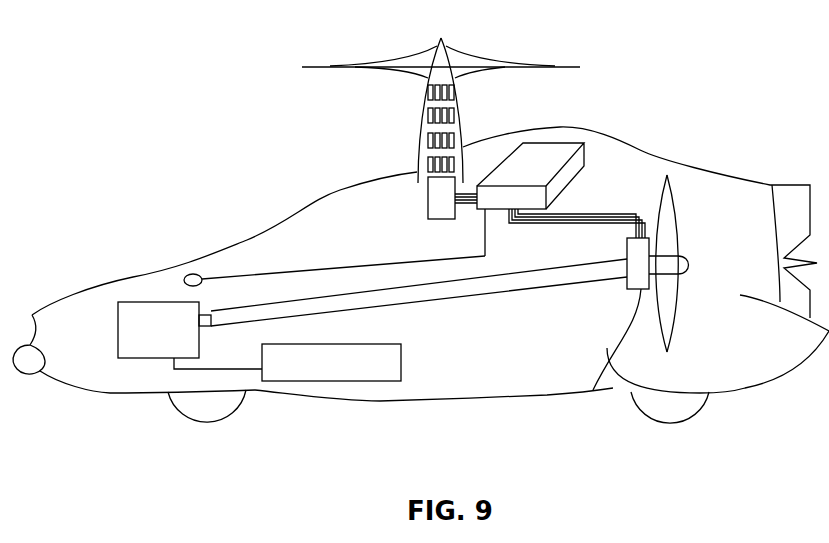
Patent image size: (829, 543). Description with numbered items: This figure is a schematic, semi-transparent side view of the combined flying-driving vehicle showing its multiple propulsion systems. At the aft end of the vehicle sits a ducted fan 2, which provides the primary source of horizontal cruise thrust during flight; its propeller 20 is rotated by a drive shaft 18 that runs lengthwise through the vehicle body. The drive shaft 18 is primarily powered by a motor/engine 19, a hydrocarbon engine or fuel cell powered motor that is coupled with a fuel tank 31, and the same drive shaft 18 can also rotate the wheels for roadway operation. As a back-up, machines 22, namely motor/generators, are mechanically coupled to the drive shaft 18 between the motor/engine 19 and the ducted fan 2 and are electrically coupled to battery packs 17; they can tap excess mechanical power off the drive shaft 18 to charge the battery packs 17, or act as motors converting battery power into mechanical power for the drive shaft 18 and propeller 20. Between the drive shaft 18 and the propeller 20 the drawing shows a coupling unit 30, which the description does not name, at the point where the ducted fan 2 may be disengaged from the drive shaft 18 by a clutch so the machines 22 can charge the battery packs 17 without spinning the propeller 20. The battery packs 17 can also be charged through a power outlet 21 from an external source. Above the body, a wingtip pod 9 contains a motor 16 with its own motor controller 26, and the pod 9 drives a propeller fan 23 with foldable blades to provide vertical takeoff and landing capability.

The ducted fan 2 is at (748, 178).
The pod 9 is at (419, 130).
The motor 16 is at (455, 115).
The battery packs 17 is at (550, 158).
The drive shaft 18 is at (447, 300).
The motor/engine 19 is at (147, 342).
The propeller 20 is at (672, 222).
The power outlet 21 is at (193, 274).
The machines 22 is at (608, 347).
The propeller fan 23 is at (570, 64).
The motor controller 26 is at (440, 206).
The gearbox 30 is at (645, 235).
The fuel tank 31 is at (329, 369).